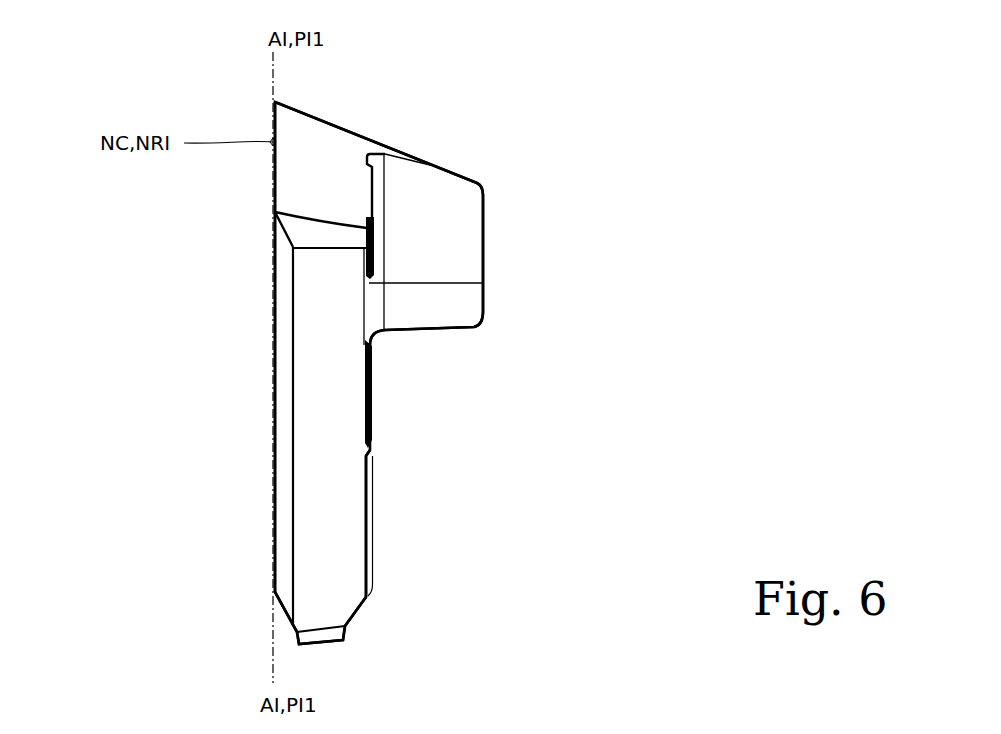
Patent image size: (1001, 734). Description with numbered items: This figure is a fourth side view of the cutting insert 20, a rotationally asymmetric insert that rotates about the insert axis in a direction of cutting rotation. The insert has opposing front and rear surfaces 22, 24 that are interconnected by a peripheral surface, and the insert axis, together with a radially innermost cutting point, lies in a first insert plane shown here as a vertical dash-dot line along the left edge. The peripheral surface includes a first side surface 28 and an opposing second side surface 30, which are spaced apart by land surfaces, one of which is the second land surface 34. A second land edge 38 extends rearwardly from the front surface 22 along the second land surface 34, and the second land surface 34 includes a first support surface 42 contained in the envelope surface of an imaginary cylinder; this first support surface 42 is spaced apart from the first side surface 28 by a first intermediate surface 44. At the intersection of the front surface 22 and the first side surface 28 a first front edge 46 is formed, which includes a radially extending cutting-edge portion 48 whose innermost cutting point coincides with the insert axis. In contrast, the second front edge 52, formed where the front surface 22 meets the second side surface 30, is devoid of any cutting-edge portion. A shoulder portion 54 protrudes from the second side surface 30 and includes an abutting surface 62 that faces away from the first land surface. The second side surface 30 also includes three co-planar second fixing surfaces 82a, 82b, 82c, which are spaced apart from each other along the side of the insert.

The cutting insert 20 is at (213, 282).
The front surface 22 is at (316, 146).
The rear surface 24 is at (340, 645).
The first side surface 28 is at (272, 373).
The second side surface 30 is at (375, 350).
The second land surface 34 is at (322, 495).
The second land edge 38 is at (366, 467).
The first support surface 42 is at (320, 552).
The first intermediate surface 44 is at (285, 420).
The first front edge 46 is at (271, 207).
The cutting-edge portion 48 is at (273, 118).
The second front edge 52 is at (378, 195).
The shoulder portion 54 is at (449, 190).
The abutting surface 62 is at (452, 242).
The second fixing surface 82a is at (373, 251).
The second fixing surface 82b is at (372, 399).
The second fixing surface 82c is at (373, 547).